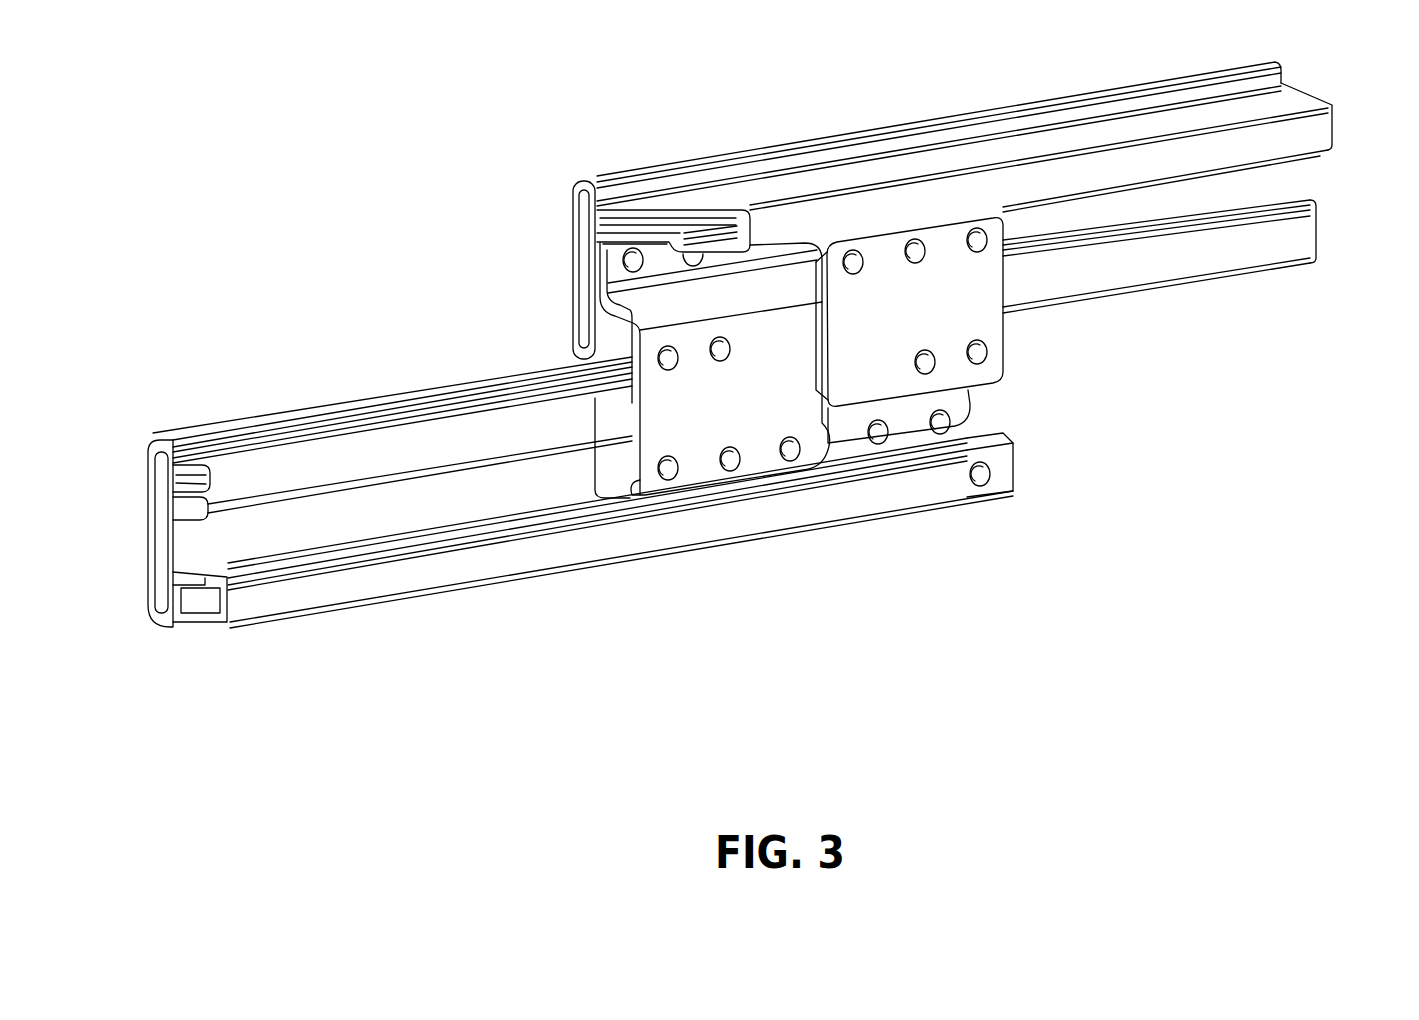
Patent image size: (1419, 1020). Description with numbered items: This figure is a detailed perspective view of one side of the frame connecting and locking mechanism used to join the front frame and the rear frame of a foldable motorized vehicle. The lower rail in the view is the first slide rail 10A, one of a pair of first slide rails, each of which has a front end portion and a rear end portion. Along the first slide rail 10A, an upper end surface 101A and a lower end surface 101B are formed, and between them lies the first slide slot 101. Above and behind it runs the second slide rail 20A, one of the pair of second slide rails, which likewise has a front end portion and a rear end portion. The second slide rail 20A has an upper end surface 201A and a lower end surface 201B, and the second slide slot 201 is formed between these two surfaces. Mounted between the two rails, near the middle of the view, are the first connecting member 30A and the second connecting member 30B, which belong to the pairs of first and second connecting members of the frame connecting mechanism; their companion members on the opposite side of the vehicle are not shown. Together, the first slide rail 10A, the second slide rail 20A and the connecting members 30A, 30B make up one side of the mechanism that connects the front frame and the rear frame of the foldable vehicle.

The first slide slot 101 is at (490, 497).
The upper end surface 101A is at (208, 500).
The lower end surface 101B is at (277, 567).
The first slide rail 10A is at (398, 577).
The second slide slot 201 is at (1040, 223).
The upper end surface 201A is at (1202, 225).
The lower end surface 201B is at (1258, 163).
The second slide rail 20A is at (1123, 263).
The first connecting member 30A is at (893, 443).
The second connecting member 30B is at (708, 483).